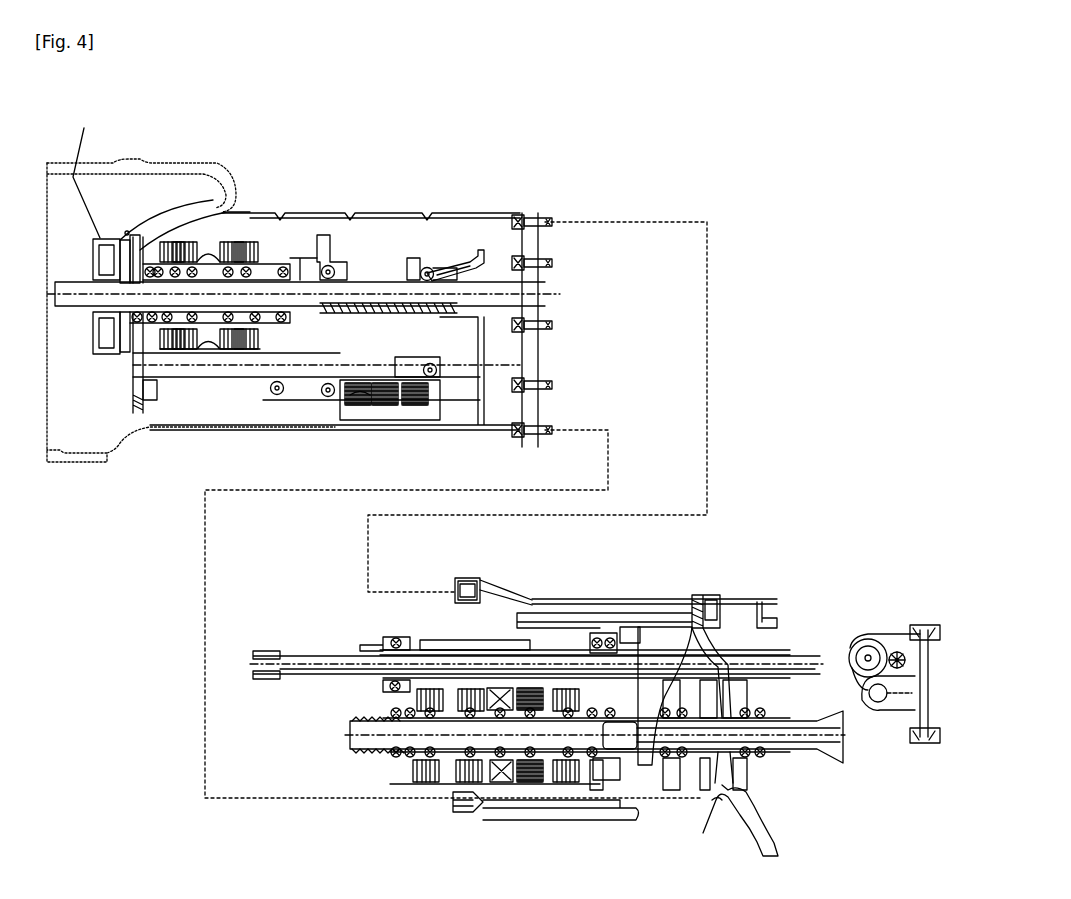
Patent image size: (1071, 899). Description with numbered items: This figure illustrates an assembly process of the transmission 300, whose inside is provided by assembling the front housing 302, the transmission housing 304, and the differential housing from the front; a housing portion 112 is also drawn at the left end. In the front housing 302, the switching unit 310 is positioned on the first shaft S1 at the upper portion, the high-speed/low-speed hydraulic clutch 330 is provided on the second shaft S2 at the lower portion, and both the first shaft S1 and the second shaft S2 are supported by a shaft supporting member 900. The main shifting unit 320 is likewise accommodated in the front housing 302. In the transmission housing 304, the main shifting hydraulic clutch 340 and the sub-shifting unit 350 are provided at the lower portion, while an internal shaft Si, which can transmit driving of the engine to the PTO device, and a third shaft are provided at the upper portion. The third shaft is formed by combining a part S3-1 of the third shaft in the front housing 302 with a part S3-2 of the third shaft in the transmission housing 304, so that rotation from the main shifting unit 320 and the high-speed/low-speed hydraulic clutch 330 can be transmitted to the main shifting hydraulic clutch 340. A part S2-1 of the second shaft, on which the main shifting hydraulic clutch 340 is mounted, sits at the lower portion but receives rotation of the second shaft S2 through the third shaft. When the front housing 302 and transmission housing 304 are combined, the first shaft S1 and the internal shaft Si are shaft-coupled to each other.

The transmission 300 is at (391, 106).
The motor housing 112 is at (73, 170).
The first shaft S1 is at (163, 290).
The switching unit 310 is at (240, 240).
The shaft supporting member 900 is at (333, 233).
The part of the third shaft S3-1 is at (393, 278).
The front housing 302 is at (428, 265).
The high-speed/low-speed hydraulic clutch 330 is at (390, 422).
The second shaft S2 is at (402, 380).
The transmission housing 304 is at (532, 600).
The internal shaft Si is at (306, 655).
The part of the third shaft S3-2 is at (443, 650).
The part of the second shaft S2-1 is at (347, 733).
The main shifting unit 320 is at (380, 800).
The main shifting hydraulic clutch 340 is at (547, 788).
The sub-shifting unit 350 is at (712, 803).